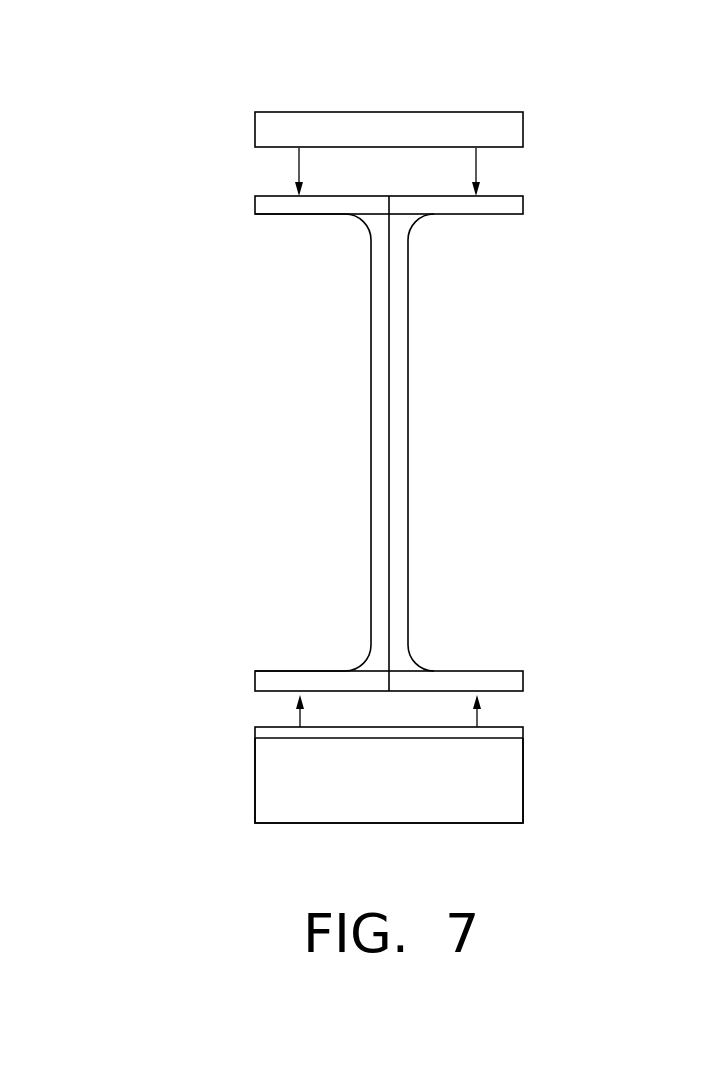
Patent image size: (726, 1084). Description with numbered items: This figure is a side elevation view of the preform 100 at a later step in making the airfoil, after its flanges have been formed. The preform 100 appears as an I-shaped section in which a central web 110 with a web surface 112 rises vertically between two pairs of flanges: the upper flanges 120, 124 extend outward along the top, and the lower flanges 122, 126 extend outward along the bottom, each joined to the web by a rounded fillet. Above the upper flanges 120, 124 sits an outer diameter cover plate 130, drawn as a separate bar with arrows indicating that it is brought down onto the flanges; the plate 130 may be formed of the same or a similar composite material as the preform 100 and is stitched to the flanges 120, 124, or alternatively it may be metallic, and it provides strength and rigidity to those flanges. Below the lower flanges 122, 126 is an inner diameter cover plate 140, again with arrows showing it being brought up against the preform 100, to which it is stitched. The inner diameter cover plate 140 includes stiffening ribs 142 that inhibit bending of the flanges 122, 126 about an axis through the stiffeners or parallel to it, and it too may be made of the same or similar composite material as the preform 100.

The preform 100 is at (558, 304).
The web 110 is at (420, 429).
The web surface 112 is at (363, 455).
The flange 120 is at (477, 217).
The flange 122 is at (477, 671).
The flange 124 is at (282, 217).
The flange 126 is at (302, 671).
The outer diameter cover plate 130 is at (343, 125).
The inner diameter cover plate 140 is at (248, 750).
The stiffening ribs 142 is at (380, 803).